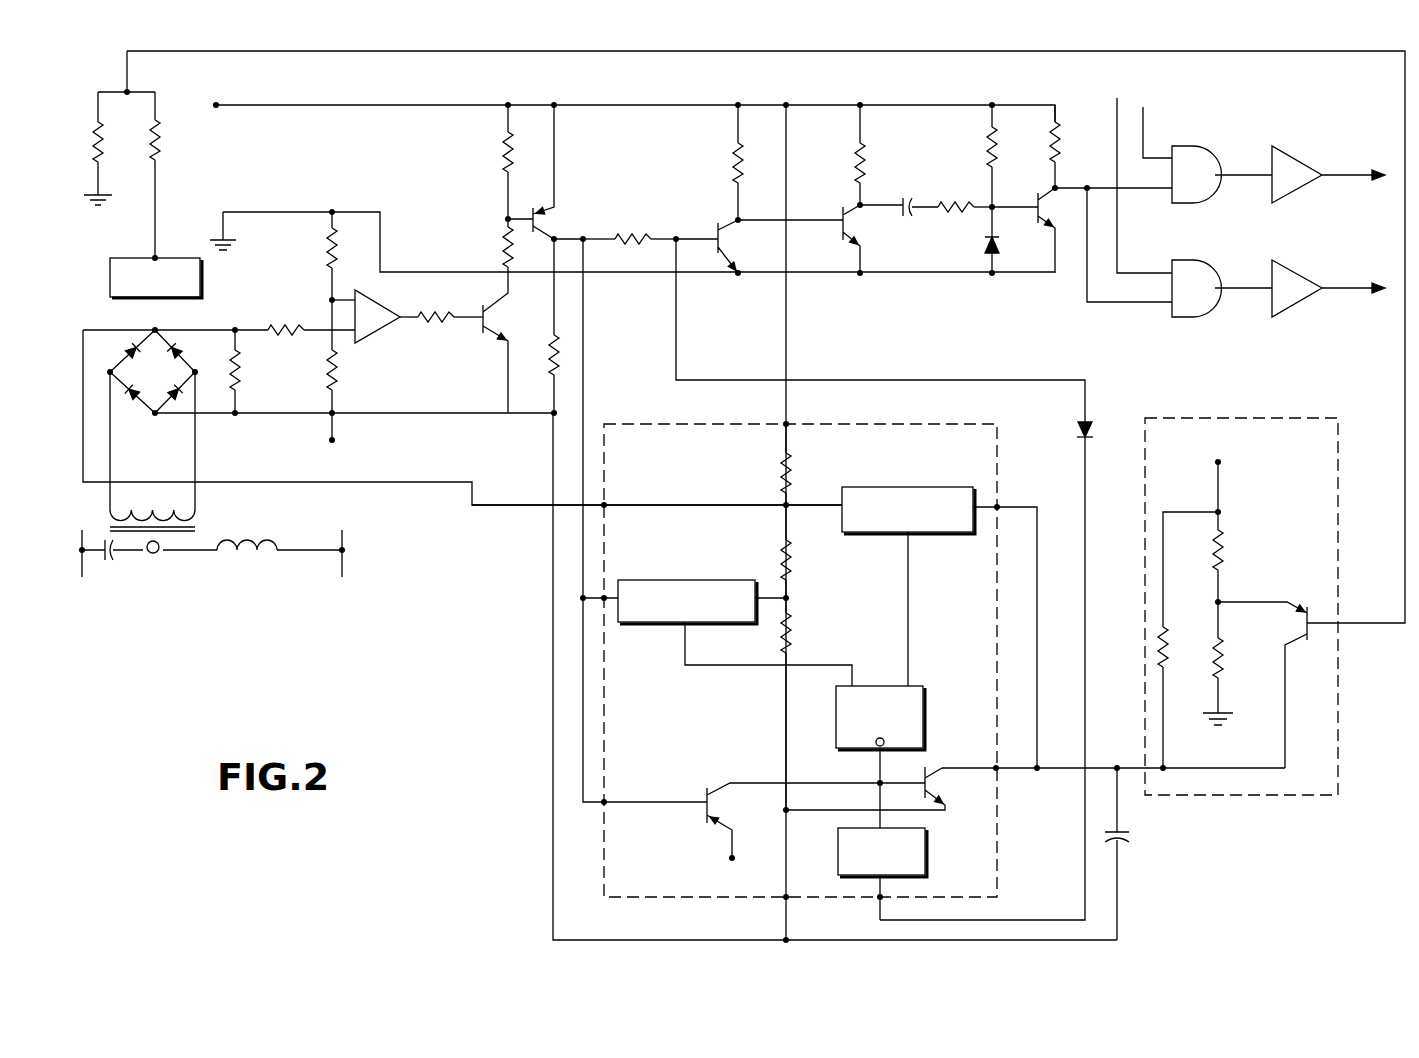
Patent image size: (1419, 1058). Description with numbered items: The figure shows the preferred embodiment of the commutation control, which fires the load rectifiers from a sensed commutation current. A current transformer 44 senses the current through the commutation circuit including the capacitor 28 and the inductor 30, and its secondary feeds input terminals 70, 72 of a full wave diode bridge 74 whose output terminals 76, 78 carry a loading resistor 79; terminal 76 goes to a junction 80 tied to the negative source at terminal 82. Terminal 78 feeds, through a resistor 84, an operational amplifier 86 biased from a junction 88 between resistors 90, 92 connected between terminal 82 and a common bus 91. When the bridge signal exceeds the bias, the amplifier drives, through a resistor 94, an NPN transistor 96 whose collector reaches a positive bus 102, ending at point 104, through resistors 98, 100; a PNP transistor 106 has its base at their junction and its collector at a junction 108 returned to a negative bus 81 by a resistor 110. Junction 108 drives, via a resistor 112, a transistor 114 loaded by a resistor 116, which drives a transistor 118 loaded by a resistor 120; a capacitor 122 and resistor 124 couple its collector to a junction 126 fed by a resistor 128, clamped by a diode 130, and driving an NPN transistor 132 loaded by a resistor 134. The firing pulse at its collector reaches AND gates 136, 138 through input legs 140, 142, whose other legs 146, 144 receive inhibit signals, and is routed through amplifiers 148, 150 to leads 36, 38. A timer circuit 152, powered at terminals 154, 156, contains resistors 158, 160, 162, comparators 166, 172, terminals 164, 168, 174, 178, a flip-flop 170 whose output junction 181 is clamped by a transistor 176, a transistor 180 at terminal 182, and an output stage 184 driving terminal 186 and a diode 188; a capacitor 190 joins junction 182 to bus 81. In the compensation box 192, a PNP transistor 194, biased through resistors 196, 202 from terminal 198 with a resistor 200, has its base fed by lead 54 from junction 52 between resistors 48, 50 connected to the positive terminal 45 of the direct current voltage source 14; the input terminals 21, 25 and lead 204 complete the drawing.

The direct current voltage source 14 is at (110, 254).
The input terminal 21 is at (88, 564).
The output terminal 25 is at (342, 559).
The capacitor 28 is at (112, 552).
The inductor 30 is at (252, 552).
The lead 36 is at (1350, 172).
The lead 38 is at (1350, 287).
The current transformer 44 is at (200, 520).
The junction 45 is at (155, 252).
The resistor 48 is at (166, 148).
The resistor 50 is at (108, 140).
The junction 52 is at (129, 83).
The conductor 54 is at (258, 60).
The input terminal 70 is at (112, 366).
The input terminal 72 is at (199, 369).
The full wave diode bridge 74 is at (163, 380).
The output terminal 76 is at (156, 416).
The output terminal 78 is at (159, 329).
The loading resistor 79 is at (245, 372).
The junction 80 is at (334, 412).
The negative bus 81 is at (414, 404).
The terminal 82 is at (338, 442).
The resistor 84 is at (285, 324).
The operational amplifier 86 is at (390, 310).
The junction 88 is at (316, 297).
The resistor 90 is at (334, 382).
The common bus 91 is at (376, 213).
The resistor 92 is at (316, 258).
The resistor 94 is at (445, 312).
The NPN transistor 96 is at (493, 326).
The resistor 98 is at (482, 260).
The resistor 100 is at (488, 155).
The positive bus 102 is at (602, 100).
The point 104 is at (220, 110).
The PNP transistor 106 is at (548, 213).
The junction 108 is at (548, 236).
The resistor 110 is at (546, 356).
The resistor 112 is at (630, 230).
The transistor 114 is at (731, 239).
The resistor 116 is at (724, 160).
The transistor 118 is at (880, 236).
The resistor 120 is at (836, 160).
The capacitor 122 is at (902, 193).
The resistor 124 is at (958, 204).
The junction 126 is at (1002, 208).
The resistor 128 is at (986, 139).
The diode 130 is at (988, 249).
The NPN transistor 132 is at (1034, 218).
The resistor 134 is at (1045, 144).
The AND gate 136 is at (1212, 148).
The AND gate 138 is at (1210, 261).
The input leg 140 is at (1143, 193).
The input leg 142 is at (1105, 306).
The input leg 144 is at (1117, 98).
The input leg 146 is at (1143, 107).
The amplifier 148 is at (1298, 148).
The amplifier 150 is at (1298, 266).
The timer circuit 152 is at (996, 428).
The terminal 154 is at (802, 420).
The terminal 156 is at (780, 904).
The resistor 158 is at (788, 464).
The resistor 160 is at (788, 566).
The resistor 162 is at (788, 634).
The terminal 164 is at (606, 502).
The comparator 166 is at (934, 488).
The terminal 168 is at (1000, 507).
The flip-flop 170 is at (928, 684).
The comparator 172 is at (706, 578).
The terminal 174 is at (604, 598).
The transistor 176 is at (720, 806).
The terminal 178 is at (604, 802).
The transistor 180 is at (940, 785).
The junction 181 is at (878, 782).
The terminal 182 is at (994, 766).
The output stage 184 is at (930, 852).
The terminal 186 is at (876, 904).
The diode 188 is at (1094, 428).
The capacitor 190 is at (1136, 840).
The compensation control circuit 192 is at (1340, 418).
The PNP transistor 194 is at (1288, 632).
The resistor 196 is at (1240, 553).
The terminal 198 is at (1224, 465).
The resistor 200 is at (1172, 645).
The resistor 202 is at (1232, 660).
The line 204 is at (398, 485).